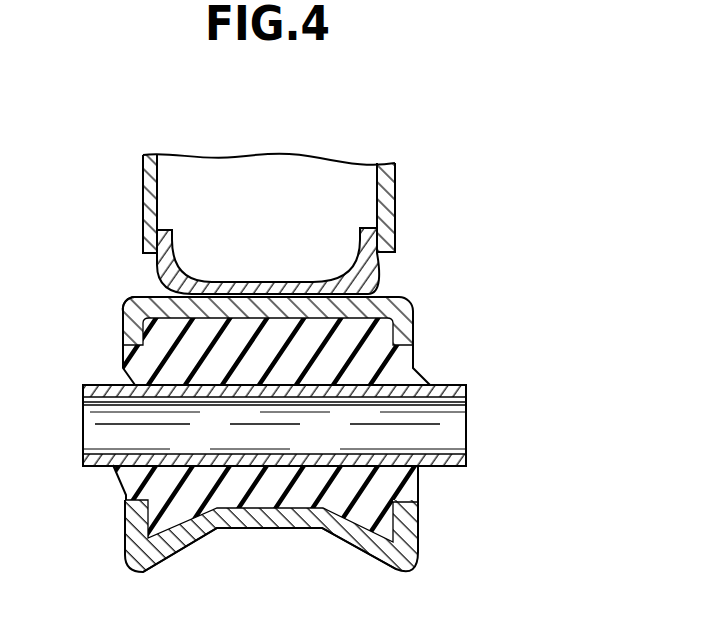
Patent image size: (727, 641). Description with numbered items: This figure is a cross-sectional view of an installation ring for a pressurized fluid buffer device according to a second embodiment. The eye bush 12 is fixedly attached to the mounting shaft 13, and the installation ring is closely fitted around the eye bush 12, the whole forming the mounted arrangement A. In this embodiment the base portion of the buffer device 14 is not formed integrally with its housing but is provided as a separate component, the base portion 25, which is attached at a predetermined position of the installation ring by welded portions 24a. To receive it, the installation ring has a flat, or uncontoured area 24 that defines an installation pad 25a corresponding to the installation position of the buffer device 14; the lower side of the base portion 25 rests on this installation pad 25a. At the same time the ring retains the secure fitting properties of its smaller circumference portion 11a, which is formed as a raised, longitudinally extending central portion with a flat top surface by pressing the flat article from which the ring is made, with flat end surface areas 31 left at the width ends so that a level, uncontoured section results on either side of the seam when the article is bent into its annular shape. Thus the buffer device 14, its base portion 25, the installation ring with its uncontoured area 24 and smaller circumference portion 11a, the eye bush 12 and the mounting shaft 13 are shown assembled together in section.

The buffer device 14 is at (387, 190).
The base portion 25 is at (378, 264).
The installation pad 25a is at (240, 296).
The flat, or uncontoured area 24 is at (426, 310).
The outer sleeve of elastic body 31 is at (268, 321).
The welded portions 24a is at (143, 295).
The mounting shaft 13 is at (455, 469).
The mount assembly A is at (488, 378).
The eye bush 12 is at (137, 488).
The smaller circumference portion 11a is at (283, 502).